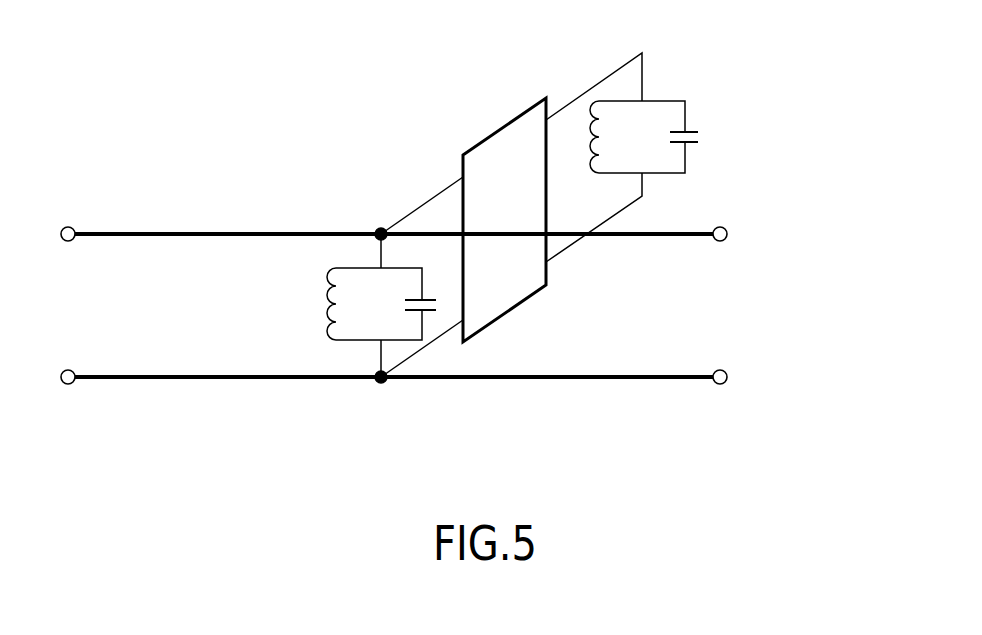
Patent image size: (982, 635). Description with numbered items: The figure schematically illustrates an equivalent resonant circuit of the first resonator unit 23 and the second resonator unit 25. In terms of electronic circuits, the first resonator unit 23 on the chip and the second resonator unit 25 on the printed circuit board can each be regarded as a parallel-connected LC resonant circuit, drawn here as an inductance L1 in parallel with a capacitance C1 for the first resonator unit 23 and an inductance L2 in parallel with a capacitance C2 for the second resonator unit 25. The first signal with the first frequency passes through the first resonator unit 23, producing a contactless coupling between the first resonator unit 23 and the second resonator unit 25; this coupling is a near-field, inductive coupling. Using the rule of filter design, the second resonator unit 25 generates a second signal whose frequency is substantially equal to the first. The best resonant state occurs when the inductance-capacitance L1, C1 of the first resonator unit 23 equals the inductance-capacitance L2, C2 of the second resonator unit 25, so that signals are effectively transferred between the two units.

The first resonator unit 23 is at (296, 369).
The second resonator unit 25 is at (680, 105).
The inductance of the first resonator unit L1 is at (336, 304).
The capacitance of the first resonator unit C1 is at (404, 304).
The inductance of the second resonator unit L2 is at (597, 137).
The capacitance of the second resonator unit C2 is at (665, 137).